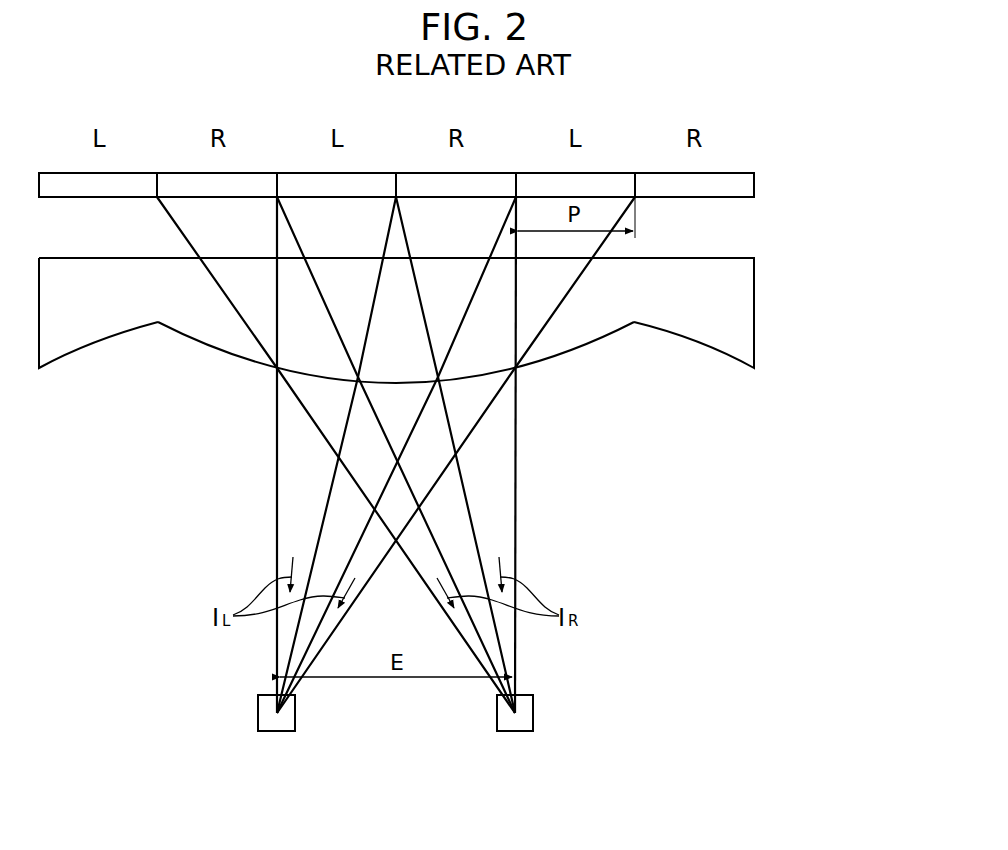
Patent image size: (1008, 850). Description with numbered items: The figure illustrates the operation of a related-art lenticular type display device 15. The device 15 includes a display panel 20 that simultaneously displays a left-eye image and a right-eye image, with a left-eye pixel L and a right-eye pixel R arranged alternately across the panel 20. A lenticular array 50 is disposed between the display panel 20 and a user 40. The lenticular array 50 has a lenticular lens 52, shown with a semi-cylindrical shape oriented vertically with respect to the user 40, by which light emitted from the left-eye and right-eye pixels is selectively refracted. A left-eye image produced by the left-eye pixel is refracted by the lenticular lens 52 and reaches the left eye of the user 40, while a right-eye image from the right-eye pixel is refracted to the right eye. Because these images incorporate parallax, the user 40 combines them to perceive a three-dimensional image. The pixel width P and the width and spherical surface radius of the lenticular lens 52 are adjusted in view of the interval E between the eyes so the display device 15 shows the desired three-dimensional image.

The lenticular type display device 15 is at (478, 303).
The display panel 20 is at (747, 184).
The lenticular array 50 is at (447, 346).
The lenticular lens 52 is at (590, 343).
The user 40 is at (563, 698).